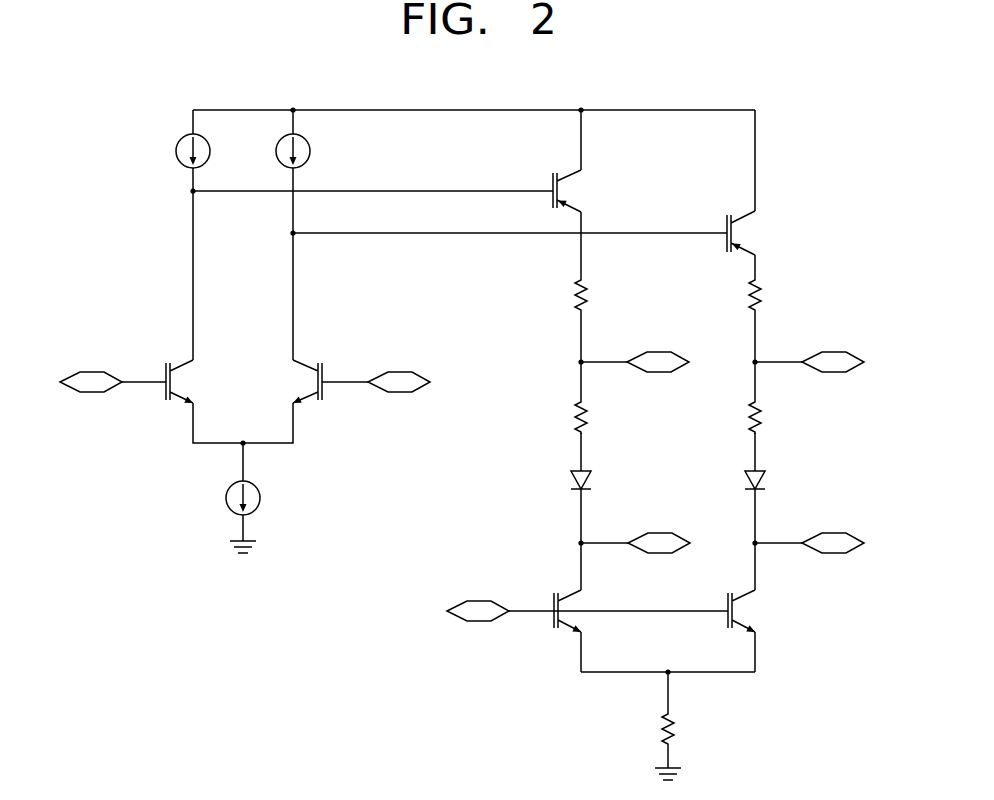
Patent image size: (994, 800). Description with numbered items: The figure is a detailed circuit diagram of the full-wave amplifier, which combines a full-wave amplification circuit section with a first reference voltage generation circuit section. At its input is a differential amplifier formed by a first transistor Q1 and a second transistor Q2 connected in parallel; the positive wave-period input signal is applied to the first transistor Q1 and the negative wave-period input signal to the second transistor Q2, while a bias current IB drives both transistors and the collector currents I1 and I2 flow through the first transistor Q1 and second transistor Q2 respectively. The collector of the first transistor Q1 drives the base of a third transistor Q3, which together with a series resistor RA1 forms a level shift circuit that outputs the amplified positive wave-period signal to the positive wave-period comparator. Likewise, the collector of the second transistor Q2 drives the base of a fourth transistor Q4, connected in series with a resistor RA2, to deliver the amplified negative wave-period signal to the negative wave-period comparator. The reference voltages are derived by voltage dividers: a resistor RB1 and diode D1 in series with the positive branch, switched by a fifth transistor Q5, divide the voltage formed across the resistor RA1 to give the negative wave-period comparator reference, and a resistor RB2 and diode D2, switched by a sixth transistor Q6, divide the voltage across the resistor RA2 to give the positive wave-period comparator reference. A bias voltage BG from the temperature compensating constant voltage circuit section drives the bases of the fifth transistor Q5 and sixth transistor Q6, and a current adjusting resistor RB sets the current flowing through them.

The collector current I1 is at (202, 151).
The collector current I2 is at (302, 151).
The bias current IB is at (258, 498).
The first transistor Q1 is at (197, 383).
The second transistor Q2 is at (296, 383).
The third transistor Q3 is at (586, 191).
The fourth transistor Q4 is at (760, 233).
The fifth transistor Q5 is at (589, 609).
The sixth transistor Q6 is at (757, 612).
The resistor RA1 is at (604, 295).
The resistor RA2 is at (778, 295).
The resistor RB1 is at (604, 417).
The resistor RB2 is at (778, 417).
The current adjusting resistor RB is at (687, 729).
The diode D1 is at (599, 481).
The diode D2 is at (773, 481).
The bias voltage BG is at (478, 597).